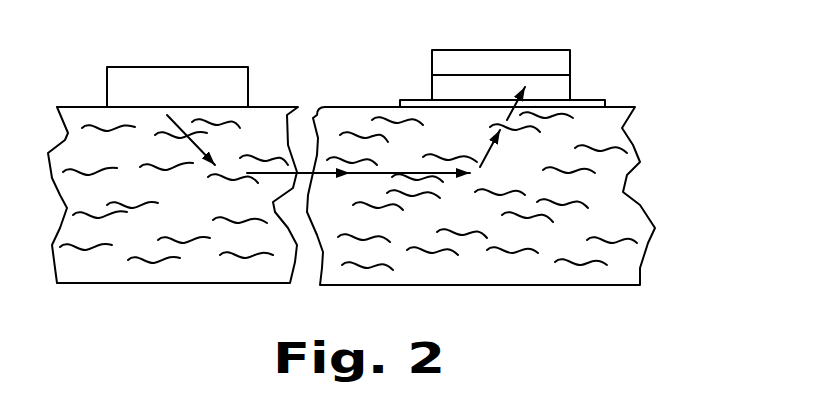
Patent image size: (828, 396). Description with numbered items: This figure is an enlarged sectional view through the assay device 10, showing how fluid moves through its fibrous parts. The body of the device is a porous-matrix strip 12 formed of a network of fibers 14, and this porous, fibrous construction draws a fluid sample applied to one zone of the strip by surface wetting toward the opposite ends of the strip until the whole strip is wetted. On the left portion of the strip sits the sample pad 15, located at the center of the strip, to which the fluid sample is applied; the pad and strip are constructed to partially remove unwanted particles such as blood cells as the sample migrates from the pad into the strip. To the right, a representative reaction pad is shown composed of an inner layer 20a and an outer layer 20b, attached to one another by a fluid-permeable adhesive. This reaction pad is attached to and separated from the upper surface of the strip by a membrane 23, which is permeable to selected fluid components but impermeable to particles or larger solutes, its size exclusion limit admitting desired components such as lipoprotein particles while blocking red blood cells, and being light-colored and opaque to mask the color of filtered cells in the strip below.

The assay device 10 is at (372, 90).
The porous-matrix strip 12 is at (203, 268).
The fibers 14 is at (605, 242).
The sample pad 15 is at (148, 77).
The inner layer 20a is at (553, 88).
The outer layer 20b is at (553, 55).
The membrane 23 is at (602, 103).